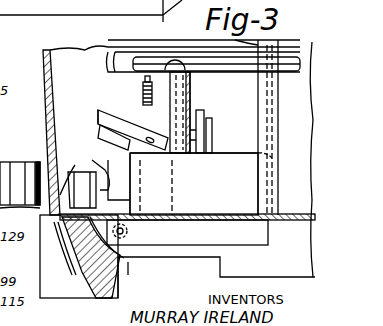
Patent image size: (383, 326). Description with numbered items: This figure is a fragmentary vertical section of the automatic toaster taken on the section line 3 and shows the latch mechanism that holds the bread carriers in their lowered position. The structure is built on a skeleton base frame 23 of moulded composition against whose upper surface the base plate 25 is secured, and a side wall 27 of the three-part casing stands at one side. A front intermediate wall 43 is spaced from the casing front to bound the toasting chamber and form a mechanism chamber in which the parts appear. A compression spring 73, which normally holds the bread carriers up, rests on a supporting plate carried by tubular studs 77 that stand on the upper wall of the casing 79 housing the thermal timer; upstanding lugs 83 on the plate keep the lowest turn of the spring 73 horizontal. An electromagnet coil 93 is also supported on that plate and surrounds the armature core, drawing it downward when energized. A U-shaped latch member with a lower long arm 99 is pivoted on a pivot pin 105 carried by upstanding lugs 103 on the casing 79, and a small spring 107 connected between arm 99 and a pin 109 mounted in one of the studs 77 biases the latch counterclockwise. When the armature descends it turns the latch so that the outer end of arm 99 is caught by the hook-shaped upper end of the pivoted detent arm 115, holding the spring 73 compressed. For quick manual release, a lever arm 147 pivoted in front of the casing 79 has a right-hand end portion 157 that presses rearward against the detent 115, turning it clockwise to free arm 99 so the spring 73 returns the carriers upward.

The section line 3 is at (163, 22).
The skeleton base frame 23 is at (110, 275).
The base plate 25 is at (206, 222).
The side wall 27 is at (42, 100).
The front intermediate wall 43 is at (276, 150).
The compression spring 73 is at (110, 47).
The tubular stud 77 is at (190, 100).
The casing 79 is at (216, 276).
The upstanding lug 83 is at (248, 70).
The electromagnet coil 93 is at (258, 52).
The lower long arm 99 is at (100, 108).
The upstanding lug 103 is at (206, 140).
The pivot pin 105 is at (210, 122).
The small spring 107 is at (143, 92).
The pin 109 is at (135, 84).
The detent arm 115 is at (142, 150).
The lever arm 147 is at (68, 170).
The right-hand end portion 157 is at (110, 185).